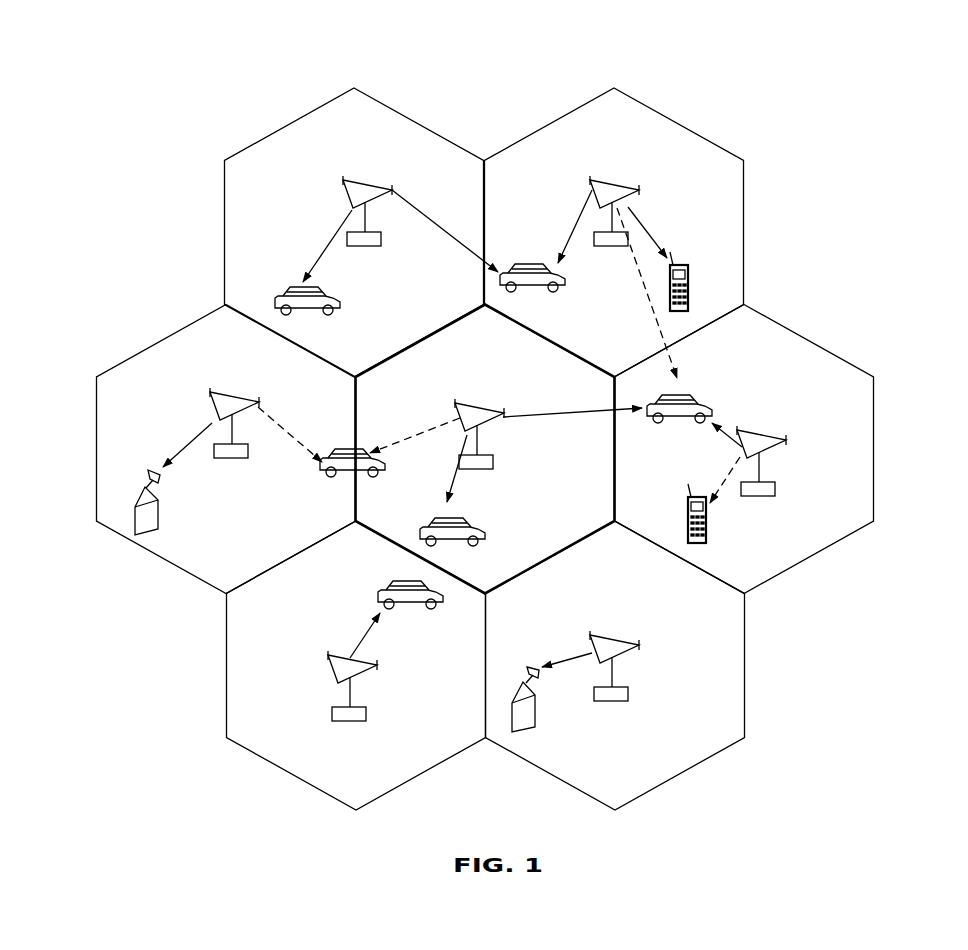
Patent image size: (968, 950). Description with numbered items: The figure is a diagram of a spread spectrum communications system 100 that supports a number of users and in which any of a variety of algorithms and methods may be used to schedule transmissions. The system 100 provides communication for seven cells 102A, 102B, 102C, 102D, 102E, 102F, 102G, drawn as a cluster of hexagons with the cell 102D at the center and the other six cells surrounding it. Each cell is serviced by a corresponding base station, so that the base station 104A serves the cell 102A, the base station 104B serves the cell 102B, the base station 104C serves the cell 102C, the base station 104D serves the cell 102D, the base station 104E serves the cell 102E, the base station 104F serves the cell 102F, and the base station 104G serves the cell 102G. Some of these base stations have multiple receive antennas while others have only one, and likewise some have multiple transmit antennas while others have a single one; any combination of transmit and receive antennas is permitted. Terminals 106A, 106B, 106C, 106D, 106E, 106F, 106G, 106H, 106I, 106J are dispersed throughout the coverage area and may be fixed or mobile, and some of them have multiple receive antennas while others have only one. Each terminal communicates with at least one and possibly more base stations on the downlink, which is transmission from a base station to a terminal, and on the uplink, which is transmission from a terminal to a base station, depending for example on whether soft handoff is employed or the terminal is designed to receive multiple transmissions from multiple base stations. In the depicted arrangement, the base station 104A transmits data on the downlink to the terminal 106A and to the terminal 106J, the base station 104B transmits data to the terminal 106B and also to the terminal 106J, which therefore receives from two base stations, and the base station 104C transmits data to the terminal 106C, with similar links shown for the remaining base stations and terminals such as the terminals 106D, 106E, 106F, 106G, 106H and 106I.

The communications system 100 is at (800, 76).
The cell 102A is at (300, 117).
The cell 102B is at (671, 120).
The cell 102C is at (155, 344).
The cell 102D is at (512, 333).
The cell 102E is at (874, 449).
The cell 102F is at (226, 675).
The cell 102G is at (746, 648).
The base station 104A is at (353, 180).
The base station 104B is at (597, 186).
The base station 104C is at (218, 398).
The base station 104D is at (460, 410).
The base station 104E is at (746, 433).
The base station 104F is at (331, 658).
The base station 104G is at (599, 636).
The terminal 106A is at (301, 296).
The terminal 106B is at (677, 266).
The terminal 106C is at (148, 472).
The terminal 106D is at (447, 521).
The terminal 106E is at (683, 397).
The terminal 106F is at (404, 580).
The terminal 106G is at (530, 668).
The terminal 106H is at (347, 455).
The terminal 106I is at (690, 500).
The terminal 106J is at (540, 266).